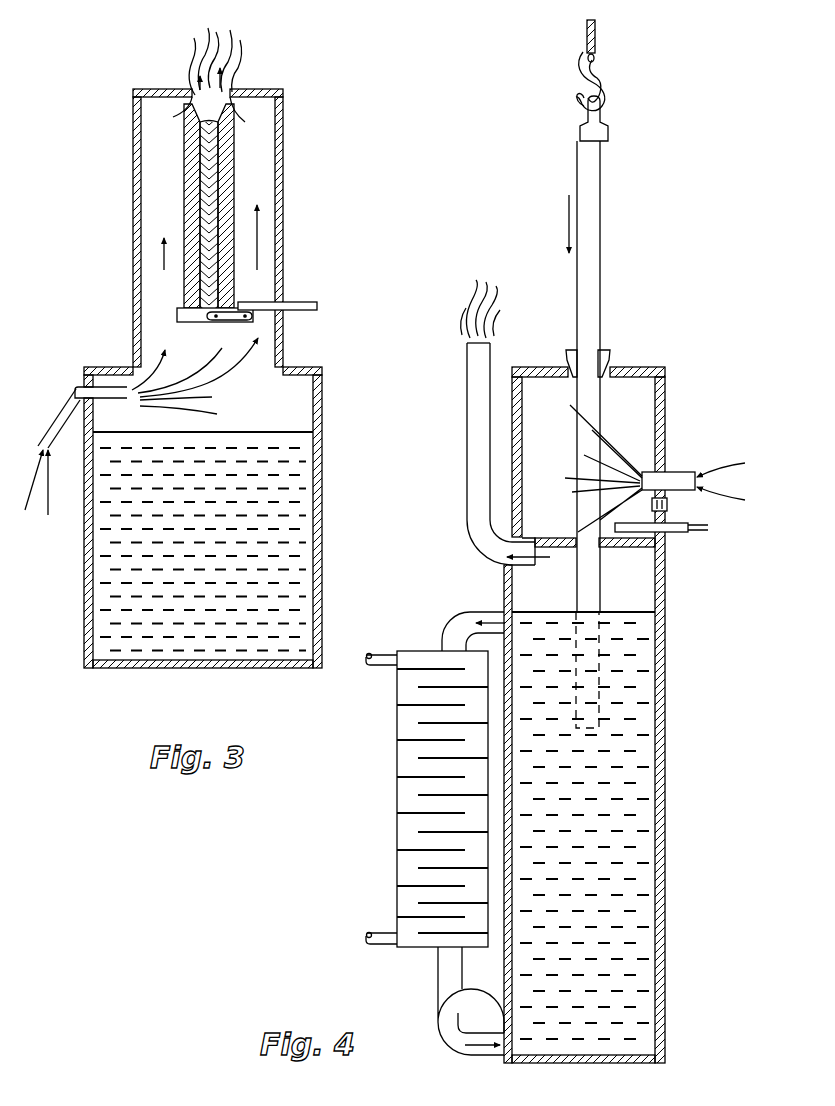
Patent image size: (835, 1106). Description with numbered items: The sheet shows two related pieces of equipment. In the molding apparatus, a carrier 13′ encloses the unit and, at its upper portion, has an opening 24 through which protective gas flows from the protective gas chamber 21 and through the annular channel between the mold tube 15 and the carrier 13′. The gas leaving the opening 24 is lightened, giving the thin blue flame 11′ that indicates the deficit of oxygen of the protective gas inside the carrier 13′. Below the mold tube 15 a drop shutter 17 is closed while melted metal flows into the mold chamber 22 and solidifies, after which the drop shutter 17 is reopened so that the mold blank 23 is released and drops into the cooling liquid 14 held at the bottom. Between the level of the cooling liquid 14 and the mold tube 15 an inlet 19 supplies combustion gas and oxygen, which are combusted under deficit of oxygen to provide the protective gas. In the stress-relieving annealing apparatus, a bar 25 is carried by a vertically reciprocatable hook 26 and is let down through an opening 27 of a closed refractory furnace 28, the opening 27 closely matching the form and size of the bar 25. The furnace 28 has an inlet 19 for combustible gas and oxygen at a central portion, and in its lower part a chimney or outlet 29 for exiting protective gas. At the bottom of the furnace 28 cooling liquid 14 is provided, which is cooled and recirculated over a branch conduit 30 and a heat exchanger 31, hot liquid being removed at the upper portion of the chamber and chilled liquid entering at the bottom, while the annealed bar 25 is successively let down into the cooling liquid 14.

In FIG. 3, the thin blue flame 11′ is at (225, 60).
In FIG. 3, the carrier 13′ is at (133, 272).
In FIG. 3, the cooling liquid 14 is at (295, 483).
In FIG. 4, the cooling liquid 14 is at (638, 675).
In FIG. 3, the mold tube 15 is at (195, 194).
In FIG. 3, the drop shutter 17 is at (185, 317).
In FIG. 3, the inlet for combustion gas and oxygen 19 is at (80, 385).
In FIG. 4, the inlet for combustion gas and oxygen 19 is at (673, 472).
In FIG. 3, the protective gas chamber 21 is at (300, 402).
In FIG. 3, the mold chamber 22 is at (203, 152).
In FIG. 3, the mold blank 23 is at (208, 163).
In FIG. 3, the opening 24 is at (195, 91).
In FIG. 4, the bar 25 is at (600, 240).
In FIG. 4, the hook 26 is at (608, 86).
In FIG. 4, the opening 27 is at (600, 350).
In FIG. 4, the refractory furnace 28 is at (650, 369).
In FIG. 4, the outlet 29 is at (480, 420).
In FIG. 4, the branch conduit 30 is at (485, 610).
In FIG. 4, the heat exchanger 31 is at (400, 782).